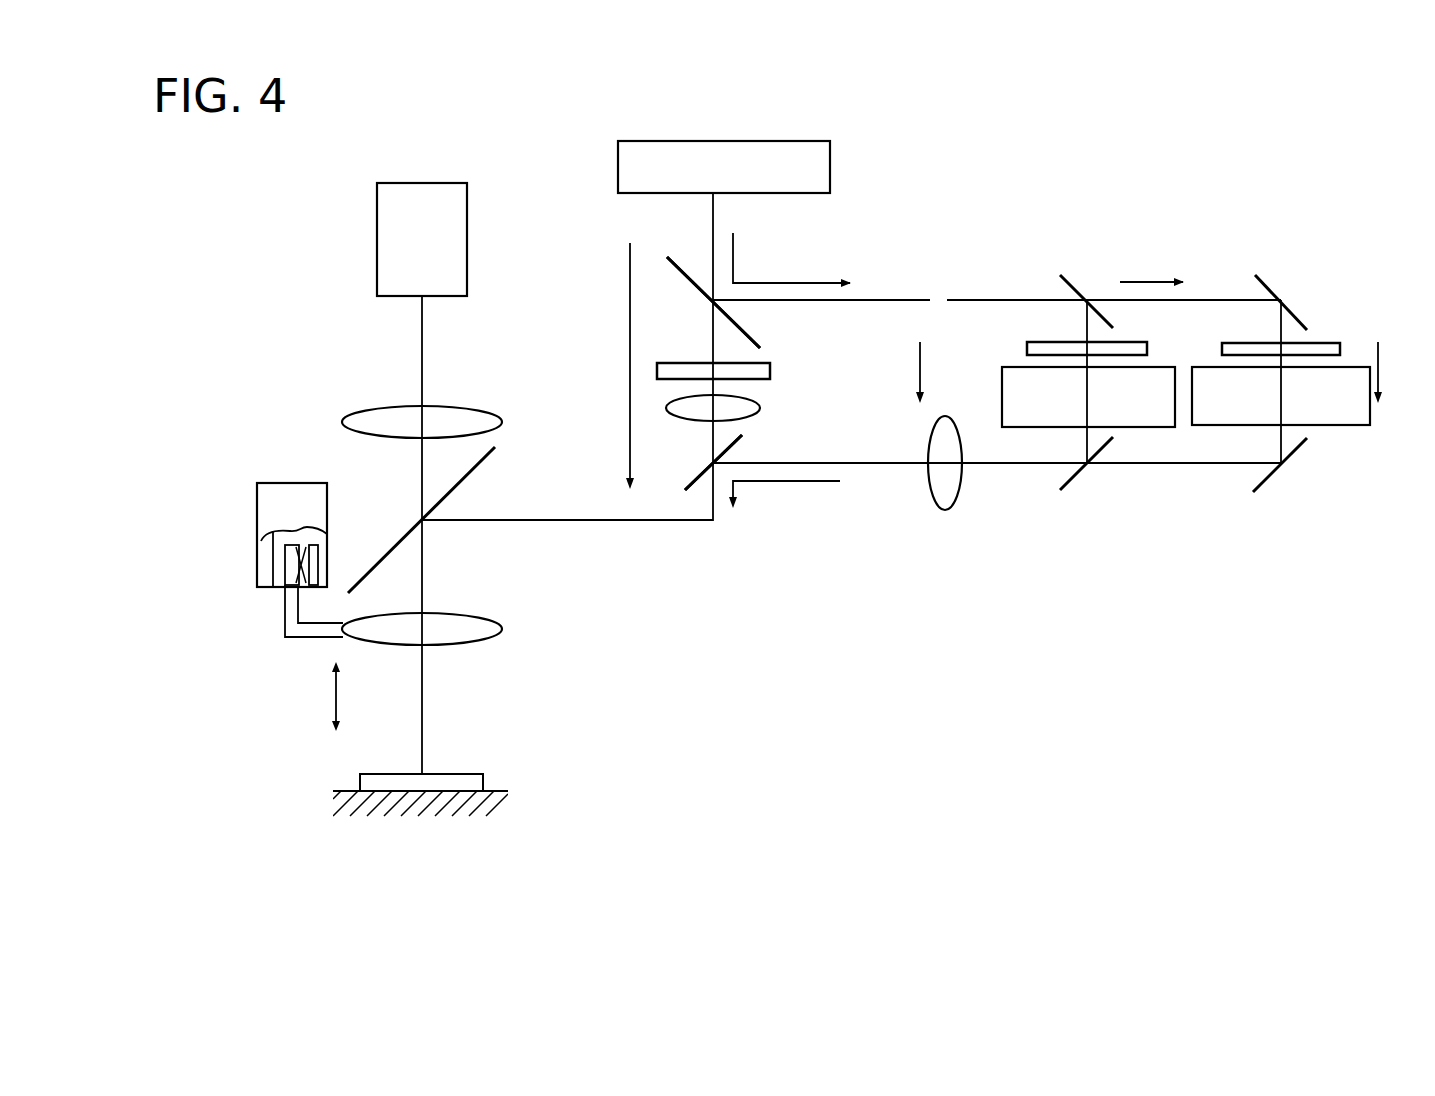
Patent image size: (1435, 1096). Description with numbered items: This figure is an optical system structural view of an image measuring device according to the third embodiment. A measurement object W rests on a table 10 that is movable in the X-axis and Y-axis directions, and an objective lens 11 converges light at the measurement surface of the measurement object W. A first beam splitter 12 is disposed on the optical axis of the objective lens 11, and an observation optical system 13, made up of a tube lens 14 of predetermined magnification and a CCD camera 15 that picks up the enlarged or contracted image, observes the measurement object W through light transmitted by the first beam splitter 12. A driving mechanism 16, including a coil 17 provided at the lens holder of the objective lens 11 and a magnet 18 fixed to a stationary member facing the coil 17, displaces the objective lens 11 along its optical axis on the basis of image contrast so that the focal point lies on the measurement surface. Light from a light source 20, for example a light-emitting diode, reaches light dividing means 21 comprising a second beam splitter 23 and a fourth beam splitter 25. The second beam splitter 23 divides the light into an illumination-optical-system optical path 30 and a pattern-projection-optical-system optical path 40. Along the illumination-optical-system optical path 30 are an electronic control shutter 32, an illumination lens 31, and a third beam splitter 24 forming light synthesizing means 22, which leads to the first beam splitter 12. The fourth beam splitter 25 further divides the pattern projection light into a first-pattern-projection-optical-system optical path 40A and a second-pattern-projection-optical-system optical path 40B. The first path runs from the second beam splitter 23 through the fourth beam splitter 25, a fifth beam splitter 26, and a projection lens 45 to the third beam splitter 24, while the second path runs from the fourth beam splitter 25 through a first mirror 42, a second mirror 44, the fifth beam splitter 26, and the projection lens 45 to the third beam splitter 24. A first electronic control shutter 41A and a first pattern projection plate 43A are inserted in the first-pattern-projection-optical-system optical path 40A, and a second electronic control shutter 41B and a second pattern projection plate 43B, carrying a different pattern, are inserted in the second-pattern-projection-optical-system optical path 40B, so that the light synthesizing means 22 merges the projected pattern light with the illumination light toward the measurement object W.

The table 10 is at (492, 817).
The objective lens 11 is at (482, 643).
The first beam splitter 12 is at (396, 543).
The observation optical system 13 is at (302, 277).
The tube lens 14 is at (367, 410).
The CCD camera 15 is at (377, 267).
The driving mechanism 16 is at (185, 597).
The coil 17 is at (312, 582).
The magnet 18 is at (298, 622).
The light source 20 is at (720, 141).
The light dividing means 21 is at (678, 255).
The light synthesizing means 22 is at (740, 447).
The second beam splitter 23 is at (673, 274).
The third beam splitter 24 is at (772, 440).
The fourth beam splitter 25 is at (1073, 282).
The fifth beam splitter 26 is at (1073, 483).
The illumination-optical-system optical path 30 is at (628, 325).
The illumination lens 31 is at (689, 421).
The electronic control shutter 32 is at (682, 363).
The pattern-projection-optical-system optical path 40 is at (791, 258).
The first-pattern-projection-optical-system optical path 40A is at (826, 429).
The second-pattern-projection-optical-system optical path 40B is at (1129, 385).
The first electronic control shutter 41A is at (1027, 348).
The second electronic control shutter 41B is at (1222, 347).
The first mirror 42 is at (1265, 283).
The first pattern projection plate 43A is at (1002, 393).
The second pattern projection plate 43B is at (1192, 412).
The second mirror 44 is at (1263, 483).
The projection lens 45 is at (957, 487).
The measurement object W is at (462, 774).